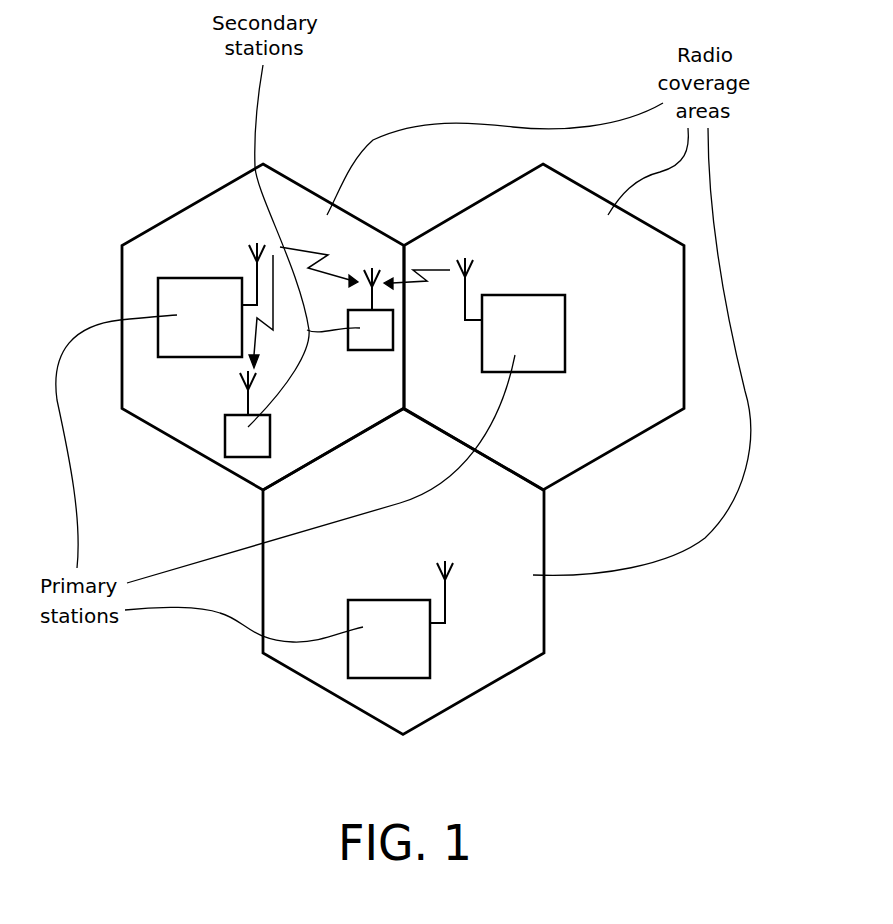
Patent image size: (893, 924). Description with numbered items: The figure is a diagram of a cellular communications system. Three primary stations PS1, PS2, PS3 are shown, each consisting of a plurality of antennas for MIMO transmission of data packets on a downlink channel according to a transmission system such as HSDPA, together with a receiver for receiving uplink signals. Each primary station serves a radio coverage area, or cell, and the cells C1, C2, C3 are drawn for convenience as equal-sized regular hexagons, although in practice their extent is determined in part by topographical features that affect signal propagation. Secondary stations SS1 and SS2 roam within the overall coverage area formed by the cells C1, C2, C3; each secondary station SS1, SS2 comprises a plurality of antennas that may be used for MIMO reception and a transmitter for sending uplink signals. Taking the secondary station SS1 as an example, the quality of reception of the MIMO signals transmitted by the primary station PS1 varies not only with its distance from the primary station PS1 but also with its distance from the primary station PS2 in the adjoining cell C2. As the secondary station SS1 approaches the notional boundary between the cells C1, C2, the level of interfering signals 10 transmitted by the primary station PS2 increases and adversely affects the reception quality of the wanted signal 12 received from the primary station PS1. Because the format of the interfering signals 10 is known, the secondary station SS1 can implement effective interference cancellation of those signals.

The radio coverage area C1 is at (165, 428).
The radio coverage area C2 is at (628, 437).
The radio coverage area C3 is at (487, 680).
The primary station PS1 is at (177, 350).
The primary station PS2 is at (565, 333).
The primary station PS3 is at (425, 650).
The secondary station SS1 is at (372, 350).
The secondary station SS2 is at (270, 435).
The interfering signals 10 is at (428, 270).
The wanted signal 12 is at (306, 252).